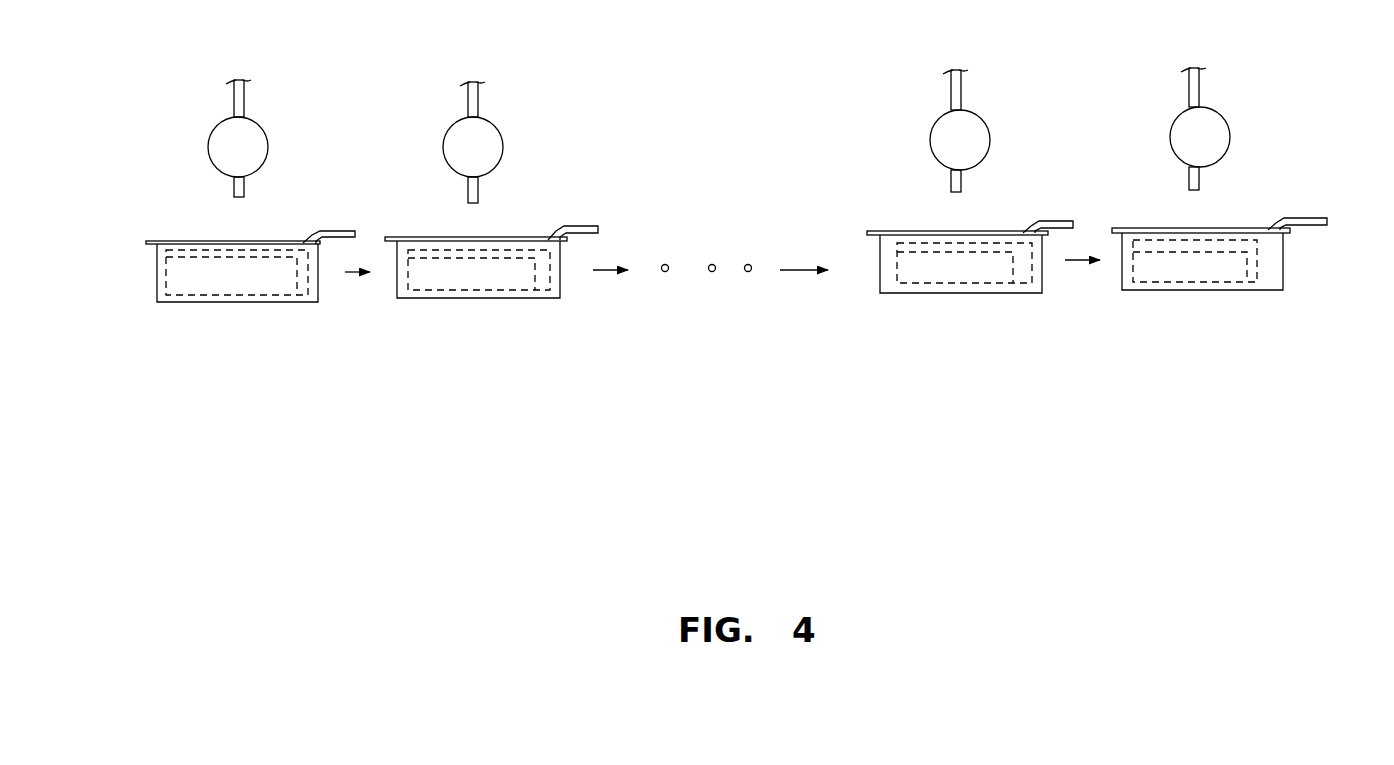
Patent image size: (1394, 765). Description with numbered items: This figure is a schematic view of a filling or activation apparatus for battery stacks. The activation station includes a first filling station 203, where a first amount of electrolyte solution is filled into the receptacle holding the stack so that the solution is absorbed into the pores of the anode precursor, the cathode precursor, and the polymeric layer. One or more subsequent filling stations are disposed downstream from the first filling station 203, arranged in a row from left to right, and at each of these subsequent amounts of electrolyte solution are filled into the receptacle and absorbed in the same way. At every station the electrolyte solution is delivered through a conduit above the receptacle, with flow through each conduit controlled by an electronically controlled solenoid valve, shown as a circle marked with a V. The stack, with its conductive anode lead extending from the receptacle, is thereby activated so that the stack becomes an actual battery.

The first filling station 203 is at (185, 128).